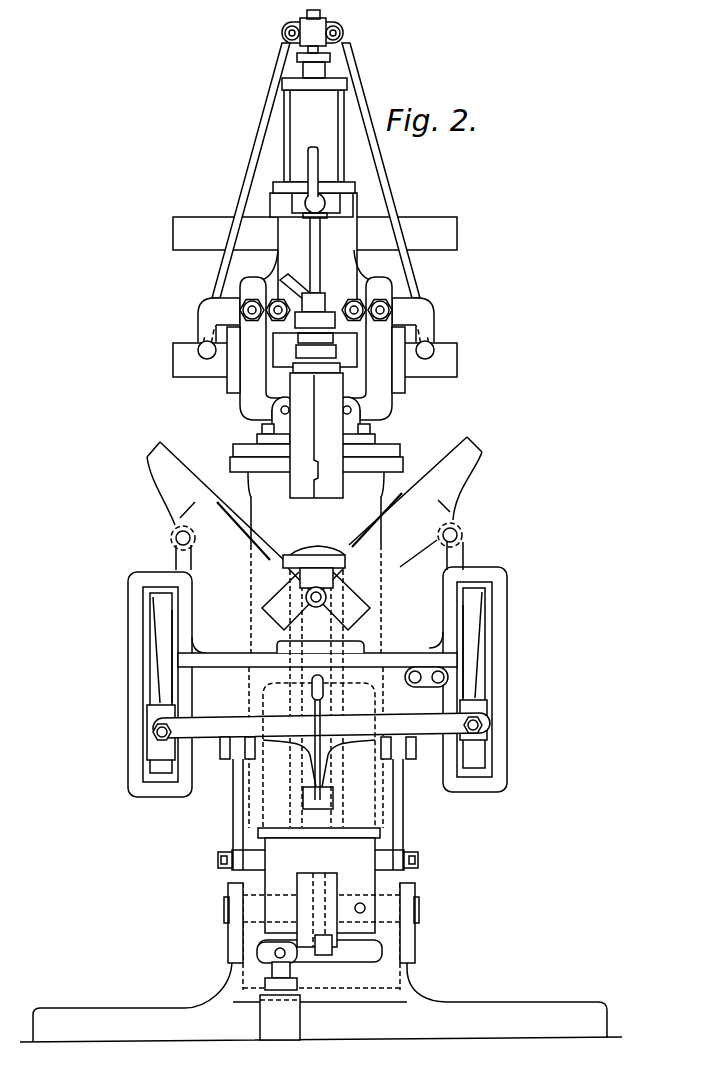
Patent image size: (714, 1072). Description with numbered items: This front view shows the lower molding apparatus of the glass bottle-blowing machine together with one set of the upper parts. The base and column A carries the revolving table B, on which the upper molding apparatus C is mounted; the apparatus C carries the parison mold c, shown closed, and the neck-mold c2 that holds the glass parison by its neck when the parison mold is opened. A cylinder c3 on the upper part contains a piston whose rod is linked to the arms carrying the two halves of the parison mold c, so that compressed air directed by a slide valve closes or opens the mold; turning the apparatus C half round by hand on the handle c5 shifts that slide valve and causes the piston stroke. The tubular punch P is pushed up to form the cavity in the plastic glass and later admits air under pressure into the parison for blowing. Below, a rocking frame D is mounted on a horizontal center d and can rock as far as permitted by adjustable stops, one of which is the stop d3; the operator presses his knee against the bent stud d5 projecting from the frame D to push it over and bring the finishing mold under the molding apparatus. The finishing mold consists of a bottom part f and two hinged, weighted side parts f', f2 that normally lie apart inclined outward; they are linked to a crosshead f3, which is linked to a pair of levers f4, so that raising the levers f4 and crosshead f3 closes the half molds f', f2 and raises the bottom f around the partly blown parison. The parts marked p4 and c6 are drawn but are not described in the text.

The base and column A is at (306, 526).
The revolving table B is at (303, 297).
The upper molding apparatus C is at (317, 184).
The punch P is at (316, 296).
The lever arm p4 is at (295, 277).
The parison mold c is at (316, 430).
The neck-mold c2 is at (315, 350).
The cylinder c3 is at (314, 194).
The handle c5 is at (311, 215).
The posts c6 is at (316, 348).
The rocking frame D is at (317, 653).
The horizontal center d is at (321, 819).
The adjustable stop d3 is at (281, 991).
The bent stud d5 is at (426, 684).
The bottom part of finishing mold f is at (316, 578).
The side part of finishing mold f' is at (215, 506).
The side part of finishing mold f2 is at (404, 551).
The crosshead f3 is at (222, 719).
The levers f4 is at (228, 813).